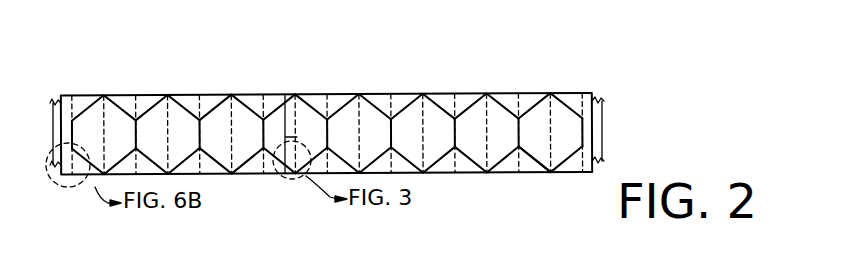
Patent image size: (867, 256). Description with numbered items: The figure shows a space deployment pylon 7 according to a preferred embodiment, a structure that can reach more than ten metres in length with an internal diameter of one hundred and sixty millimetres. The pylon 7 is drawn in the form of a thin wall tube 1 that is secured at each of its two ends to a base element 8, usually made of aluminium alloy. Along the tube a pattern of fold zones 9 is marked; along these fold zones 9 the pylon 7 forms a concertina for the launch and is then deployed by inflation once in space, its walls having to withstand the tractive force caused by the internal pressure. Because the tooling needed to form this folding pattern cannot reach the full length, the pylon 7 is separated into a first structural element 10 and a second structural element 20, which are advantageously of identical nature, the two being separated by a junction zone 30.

The thin wall tube 1 is at (299, 92).
The space deployment pylon 7 is at (607, 88).
The base element 8 is at (52, 102).
The fold zones 9 is at (533, 164).
The first structural element 10 is at (188, 96).
The second structural element 20 is at (444, 98).
The junction zone 30 is at (272, 174).